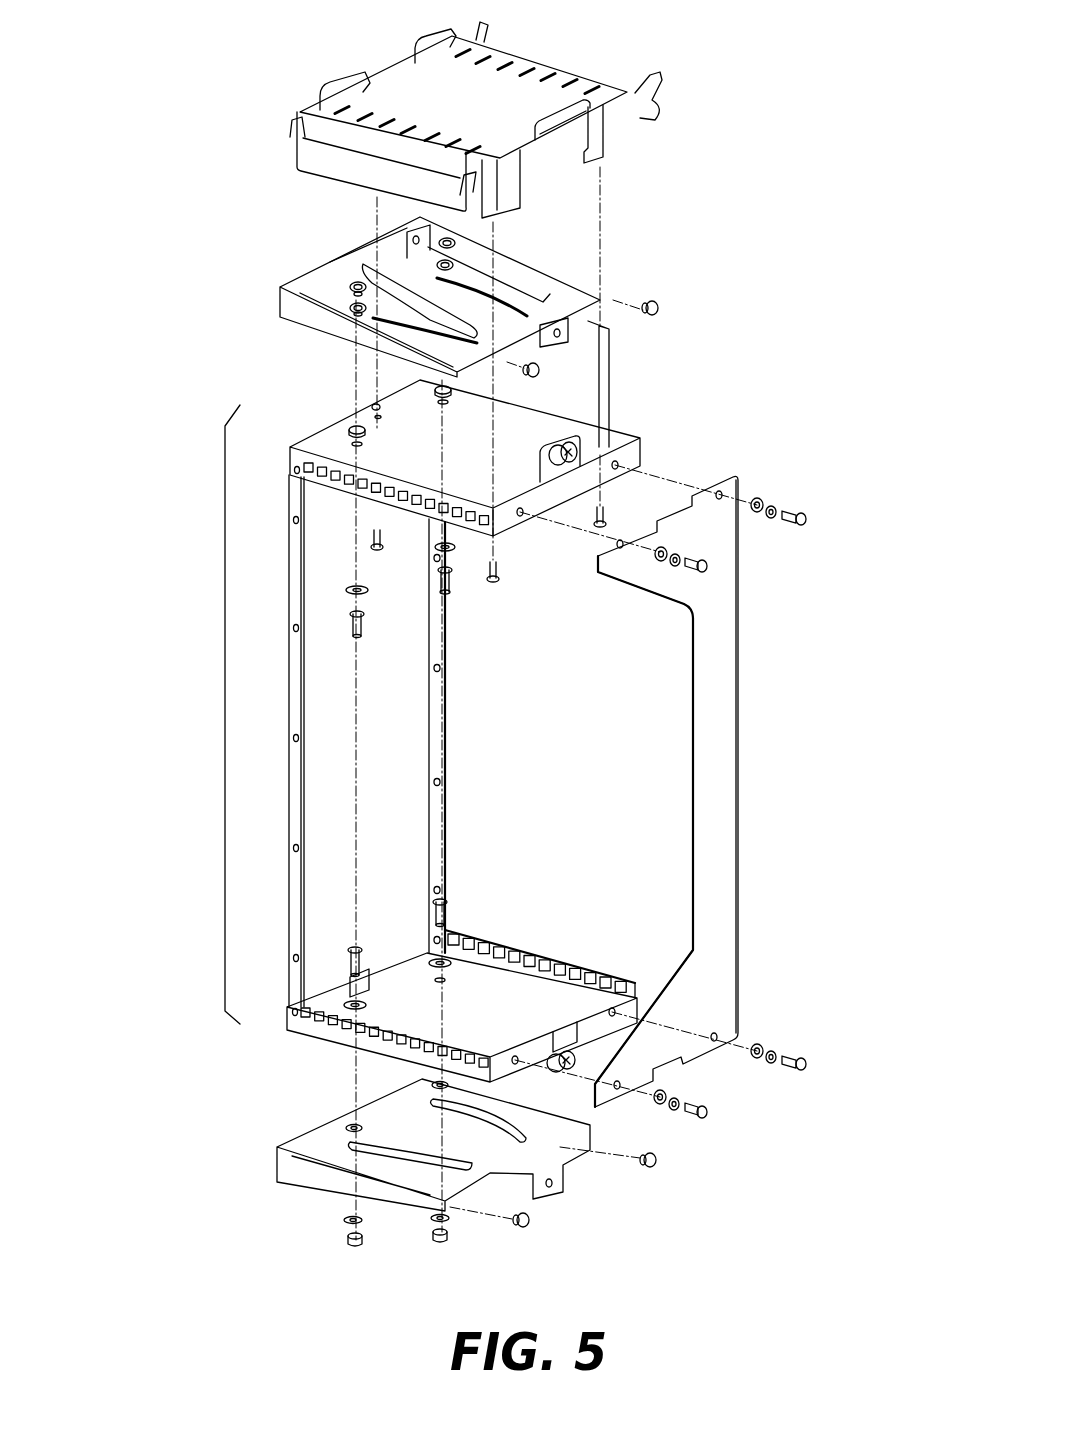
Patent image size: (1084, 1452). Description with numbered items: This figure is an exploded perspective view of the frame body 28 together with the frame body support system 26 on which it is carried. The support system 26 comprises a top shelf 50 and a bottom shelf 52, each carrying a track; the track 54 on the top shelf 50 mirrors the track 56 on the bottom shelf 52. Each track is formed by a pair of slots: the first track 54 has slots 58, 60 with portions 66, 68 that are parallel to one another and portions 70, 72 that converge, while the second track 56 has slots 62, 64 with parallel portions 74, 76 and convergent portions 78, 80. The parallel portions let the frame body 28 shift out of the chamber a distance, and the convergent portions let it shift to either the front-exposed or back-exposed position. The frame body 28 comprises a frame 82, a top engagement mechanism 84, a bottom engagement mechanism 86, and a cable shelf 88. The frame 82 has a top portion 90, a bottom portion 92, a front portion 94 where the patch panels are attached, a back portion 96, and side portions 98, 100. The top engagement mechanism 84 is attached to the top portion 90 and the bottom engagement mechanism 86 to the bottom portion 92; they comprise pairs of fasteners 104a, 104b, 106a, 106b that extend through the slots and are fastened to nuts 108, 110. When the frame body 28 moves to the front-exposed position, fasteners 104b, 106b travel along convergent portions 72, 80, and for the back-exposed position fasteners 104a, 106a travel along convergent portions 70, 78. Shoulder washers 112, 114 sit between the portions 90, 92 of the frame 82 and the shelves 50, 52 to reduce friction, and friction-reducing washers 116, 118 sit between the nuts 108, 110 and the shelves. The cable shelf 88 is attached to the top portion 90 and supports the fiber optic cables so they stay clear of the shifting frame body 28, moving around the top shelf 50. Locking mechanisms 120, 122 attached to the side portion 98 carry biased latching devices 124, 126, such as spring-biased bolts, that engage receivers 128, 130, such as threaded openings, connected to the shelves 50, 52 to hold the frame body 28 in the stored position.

The frame body support system 26 is at (235, 288).
The frame body 28 is at (828, 433).
The top shelf 50 is at (292, 317).
The bottom shelf 52 is at (280, 1177).
The track 54 is at (547, 350).
The track 56 is at (400, 1115).
The slot 58 is at (447, 337).
The slot 60 is at (517, 300).
The slot 62 is at (397, 1148).
The slot 64 is at (513, 1115).
The parallel portion 66 is at (375, 330).
The parallel portion 68 is at (368, 272).
The convergent portion 70 is at (413, 357).
The convergent portion 72 is at (543, 297).
The parallel portion 74 is at (345, 1152).
The parallel portion 76 is at (463, 1097).
The convergent portion 78 is at (430, 1170).
The convergent portion 80 is at (500, 1108).
The frame 82 is at (225, 712).
The top engagement mechanism 84 is at (430, 620).
The bottom engagement mechanism 86 is at (453, 878).
The cable shelf 88 is at (572, 76).
The top portion 90 is at (640, 438).
The bottom portion 92 is at (560, 965).
The front portion 94 is at (743, 600).
The back portion 96 is at (290, 556).
The side portion 98 is at (738, 818).
The side portion 100 is at (344, 763).
The fastener 104a is at (347, 612).
The fastener 104b is at (457, 590).
The fastener 106a is at (345, 955).
The fastener 106b is at (450, 905).
The nut 108 is at (443, 265).
The nut 110 is at (362, 1240).
The shoulder washer 112 is at (370, 440).
The shoulder washer 114 is at (440, 1083).
The friction-reducing washer 116 is at (357, 285).
The friction-reducing washer 118 is at (347, 1222).
The locking mechanism 120 is at (610, 383).
The locking mechanism 122 is at (592, 1113).
The biased latching device 124 is at (547, 447).
The biased latching device 126 is at (550, 1050).
The receiver 128 is at (613, 300).
The receiver 130 is at (552, 1184).